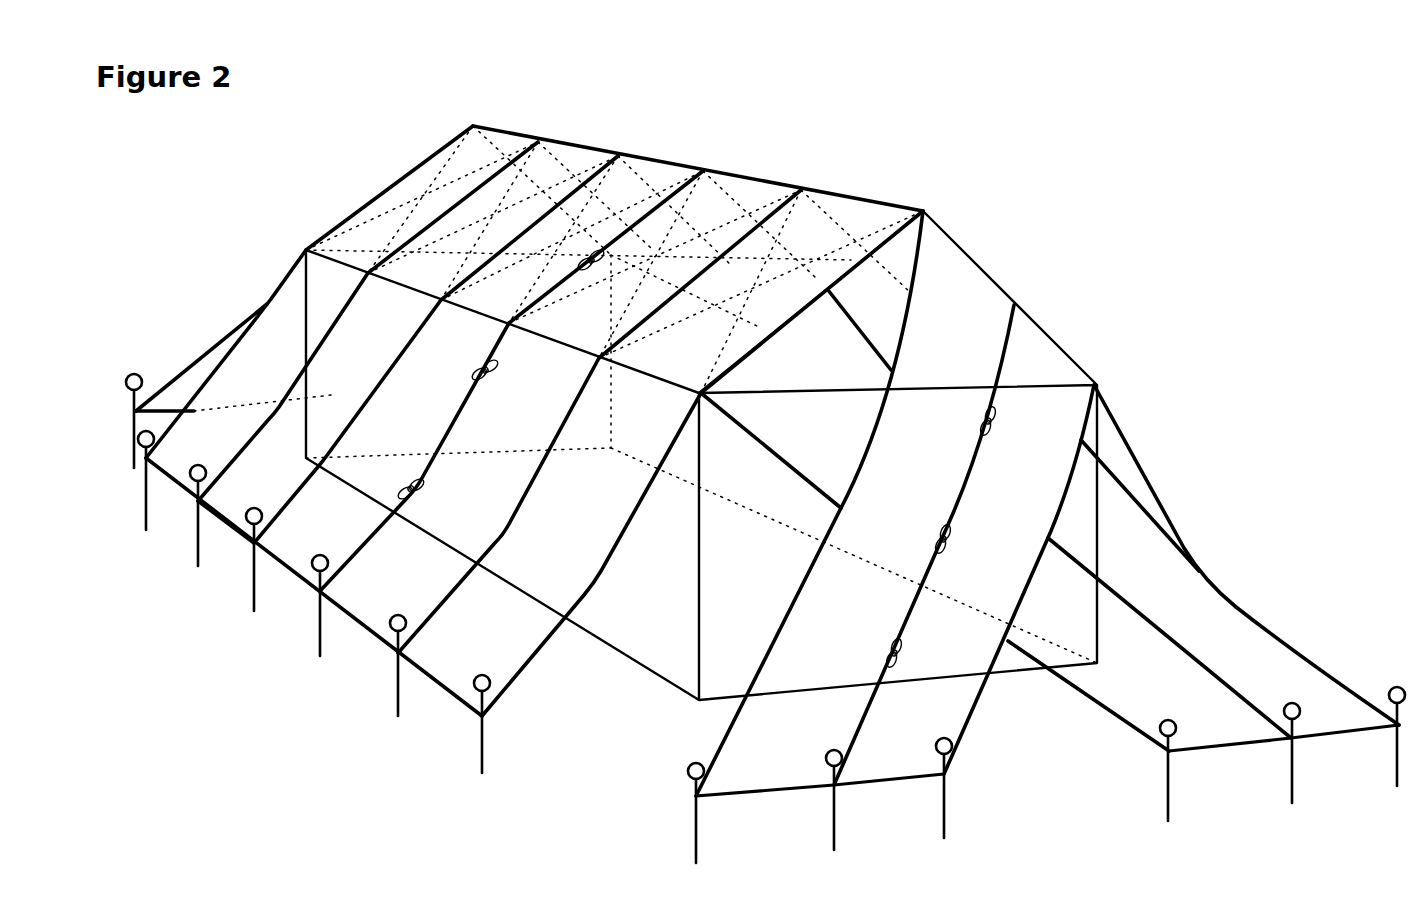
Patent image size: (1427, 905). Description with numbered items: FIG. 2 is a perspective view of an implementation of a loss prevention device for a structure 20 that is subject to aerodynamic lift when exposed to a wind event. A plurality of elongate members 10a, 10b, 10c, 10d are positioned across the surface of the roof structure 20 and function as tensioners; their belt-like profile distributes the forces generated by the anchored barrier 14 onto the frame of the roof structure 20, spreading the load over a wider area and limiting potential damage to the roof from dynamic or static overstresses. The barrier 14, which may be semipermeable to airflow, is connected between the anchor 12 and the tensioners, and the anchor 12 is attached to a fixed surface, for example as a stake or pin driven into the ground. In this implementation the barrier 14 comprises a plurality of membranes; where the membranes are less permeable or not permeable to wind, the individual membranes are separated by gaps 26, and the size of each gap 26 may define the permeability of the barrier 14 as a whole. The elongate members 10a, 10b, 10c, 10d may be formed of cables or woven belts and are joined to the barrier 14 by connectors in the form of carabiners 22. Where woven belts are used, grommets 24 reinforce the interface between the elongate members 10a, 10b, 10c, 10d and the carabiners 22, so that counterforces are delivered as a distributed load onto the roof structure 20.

The structure 20 is at (573, 140).
The elongate member 10a is at (635, 177).
The elongate member 10b is at (735, 197).
The elongate member 10c is at (963, 284).
The elongate member 10d is at (1045, 361).
The anchor 12 is at (480, 738).
The barrier 14 is at (267, 470).
The carabiner 22 is at (987, 433).
The grommet 24 is at (983, 414).
The gap 26 is at (356, 558).